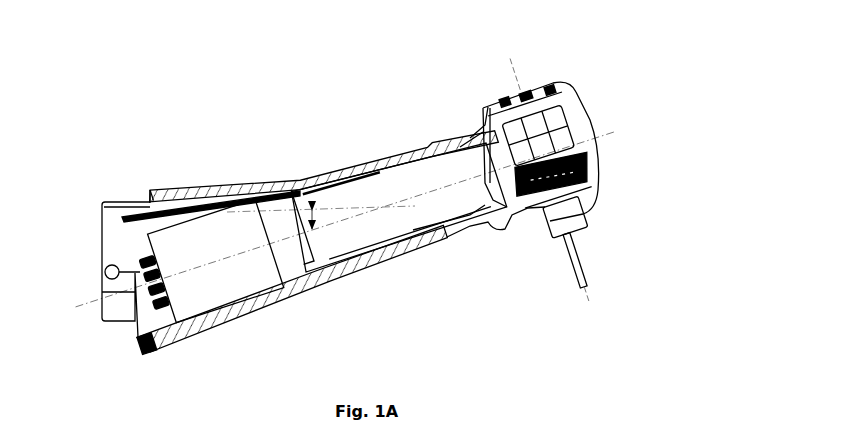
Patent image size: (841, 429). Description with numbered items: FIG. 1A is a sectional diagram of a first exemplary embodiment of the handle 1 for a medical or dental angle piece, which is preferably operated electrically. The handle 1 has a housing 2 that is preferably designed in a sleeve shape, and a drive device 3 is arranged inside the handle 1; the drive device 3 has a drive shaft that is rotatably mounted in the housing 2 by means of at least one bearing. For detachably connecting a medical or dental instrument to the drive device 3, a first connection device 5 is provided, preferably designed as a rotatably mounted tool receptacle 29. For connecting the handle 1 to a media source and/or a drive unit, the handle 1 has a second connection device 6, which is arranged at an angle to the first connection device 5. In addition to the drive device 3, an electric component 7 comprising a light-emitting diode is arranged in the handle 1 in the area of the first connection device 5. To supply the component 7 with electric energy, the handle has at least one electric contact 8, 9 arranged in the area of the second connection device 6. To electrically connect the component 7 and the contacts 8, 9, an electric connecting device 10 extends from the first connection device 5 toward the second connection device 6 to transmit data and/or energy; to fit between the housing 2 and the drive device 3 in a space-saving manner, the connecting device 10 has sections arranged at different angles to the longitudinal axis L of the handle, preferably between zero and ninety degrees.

The handle 1 is at (158, 100).
The housing 2 is at (305, 172).
The drive device 3 is at (425, 175).
The first connection device 5 is at (587, 215).
The second connection device 6 is at (116, 233).
The electric component 7 is at (497, 223).
The electric contact 8 is at (203, 189).
The electric contact 9 is at (137, 212).
The electric connecting device 10 is at (220, 203).
The tool receptacle 29 is at (550, 147).
The longitudinal axis L is at (87, 306).